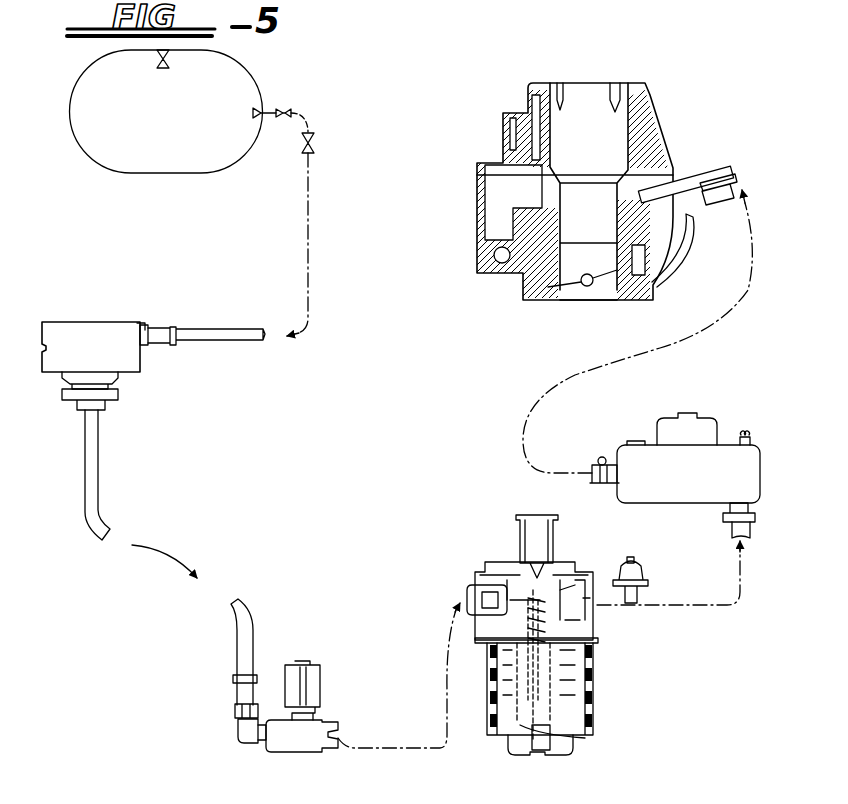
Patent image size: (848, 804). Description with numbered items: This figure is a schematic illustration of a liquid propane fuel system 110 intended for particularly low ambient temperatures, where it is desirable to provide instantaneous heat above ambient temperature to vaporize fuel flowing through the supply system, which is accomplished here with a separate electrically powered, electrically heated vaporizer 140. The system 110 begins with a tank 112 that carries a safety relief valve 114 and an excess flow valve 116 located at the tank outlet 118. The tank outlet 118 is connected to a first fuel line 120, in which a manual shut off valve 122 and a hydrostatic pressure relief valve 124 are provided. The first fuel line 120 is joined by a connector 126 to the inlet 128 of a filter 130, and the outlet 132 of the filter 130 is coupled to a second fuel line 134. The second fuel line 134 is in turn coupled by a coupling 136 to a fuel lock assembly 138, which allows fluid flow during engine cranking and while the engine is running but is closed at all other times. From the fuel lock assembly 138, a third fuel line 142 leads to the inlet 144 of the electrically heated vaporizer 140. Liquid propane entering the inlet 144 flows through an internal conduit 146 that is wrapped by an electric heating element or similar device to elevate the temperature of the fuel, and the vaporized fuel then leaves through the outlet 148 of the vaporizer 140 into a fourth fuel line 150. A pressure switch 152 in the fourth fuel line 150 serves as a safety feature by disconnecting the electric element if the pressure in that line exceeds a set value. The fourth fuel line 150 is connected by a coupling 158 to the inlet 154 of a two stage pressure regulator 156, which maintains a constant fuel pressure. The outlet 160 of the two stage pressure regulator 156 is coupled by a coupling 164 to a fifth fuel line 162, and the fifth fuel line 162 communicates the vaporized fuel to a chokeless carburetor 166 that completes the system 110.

The system 110 is at (388, 125).
The tank 112 is at (253, 74).
The safety relief valve 114 is at (162, 70).
The excess flow valve 116 is at (253, 113).
The tank outlet 118 is at (262, 113).
The first fuel line 120 is at (307, 237).
The manual shut off valve 122 is at (285, 118).
The hydrostatic pressure relief valve 124 is at (312, 141).
The connector 126 is at (158, 333).
The inlet 128 is at (139, 322).
The filter 130 is at (95, 362).
The outlet 132 is at (118, 395).
The second fuel line 134 is at (95, 470).
The coupling 136 is at (235, 713).
The fuel lock assembly 138 is at (306, 747).
The electrically heated vaporizer 140 is at (503, 547).
The third fuel line 142 is at (362, 750).
The inlet 144 is at (473, 607).
The internal conduit 146 is at (570, 738).
The outlet 148 is at (580, 603).
The fourth fuel line 150 is at (688, 607).
The pressure switch 152 is at (648, 583).
The inlet 154 is at (752, 505).
The two stage pressure regulator 156 is at (696, 486).
The coupling 158 is at (755, 518).
The outlet 160 is at (616, 458).
The fifth fuel line 162 is at (620, 340).
The coupling 164 is at (603, 457).
The chokeless carburetor 166 is at (680, 121).